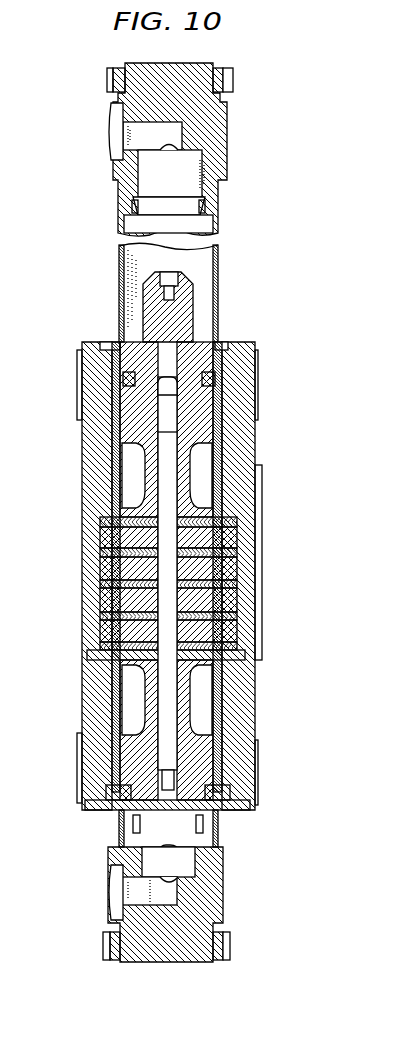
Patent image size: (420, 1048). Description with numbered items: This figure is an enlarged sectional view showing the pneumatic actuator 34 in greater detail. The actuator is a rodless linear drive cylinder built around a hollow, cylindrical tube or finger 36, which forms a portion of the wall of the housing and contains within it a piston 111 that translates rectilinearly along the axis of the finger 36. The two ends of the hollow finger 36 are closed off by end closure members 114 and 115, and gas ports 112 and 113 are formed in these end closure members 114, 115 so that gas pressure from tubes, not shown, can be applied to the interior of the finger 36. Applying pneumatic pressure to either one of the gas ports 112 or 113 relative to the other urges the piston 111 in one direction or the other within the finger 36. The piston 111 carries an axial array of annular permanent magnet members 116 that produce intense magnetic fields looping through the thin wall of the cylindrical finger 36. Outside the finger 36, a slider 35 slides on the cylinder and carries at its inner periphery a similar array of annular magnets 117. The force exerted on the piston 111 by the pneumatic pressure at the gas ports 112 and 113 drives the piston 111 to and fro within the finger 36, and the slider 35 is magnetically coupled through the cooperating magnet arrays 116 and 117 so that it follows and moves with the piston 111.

The pneumatic actuator 34 is at (70, 437).
The slider 35 is at (243, 362).
The pneumatic actuator cylinder or finger 36 is at (215, 262).
The piston 111 is at (185, 392).
The gas port 112 is at (107, 143).
The gas port 113 is at (108, 894).
The end closure member 114 is at (215, 167).
The end closure member 115 is at (212, 878).
The annular permanent magnet members 116 is at (199, 569).
The annular magnets 117 is at (228, 600).